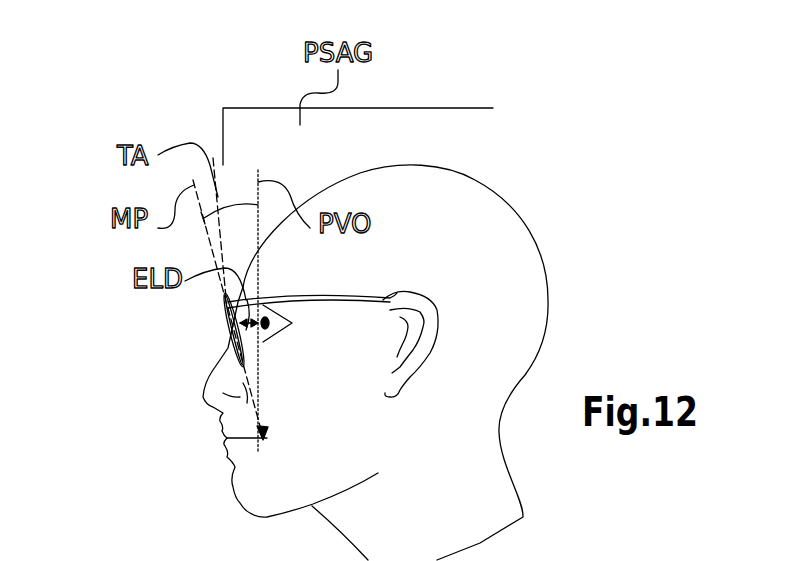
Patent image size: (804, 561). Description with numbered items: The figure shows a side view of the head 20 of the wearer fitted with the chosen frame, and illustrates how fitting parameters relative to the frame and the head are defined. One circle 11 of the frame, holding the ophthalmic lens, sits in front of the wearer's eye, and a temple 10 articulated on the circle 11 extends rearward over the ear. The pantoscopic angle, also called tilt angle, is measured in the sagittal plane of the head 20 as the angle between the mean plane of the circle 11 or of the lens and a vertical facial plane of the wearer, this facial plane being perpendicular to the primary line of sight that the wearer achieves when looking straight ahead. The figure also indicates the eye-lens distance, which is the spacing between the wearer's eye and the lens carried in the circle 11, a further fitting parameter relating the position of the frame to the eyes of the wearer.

The temple 10 is at (323, 302).
The circle 11 is at (225, 300).
The head 20 is at (490, 207).